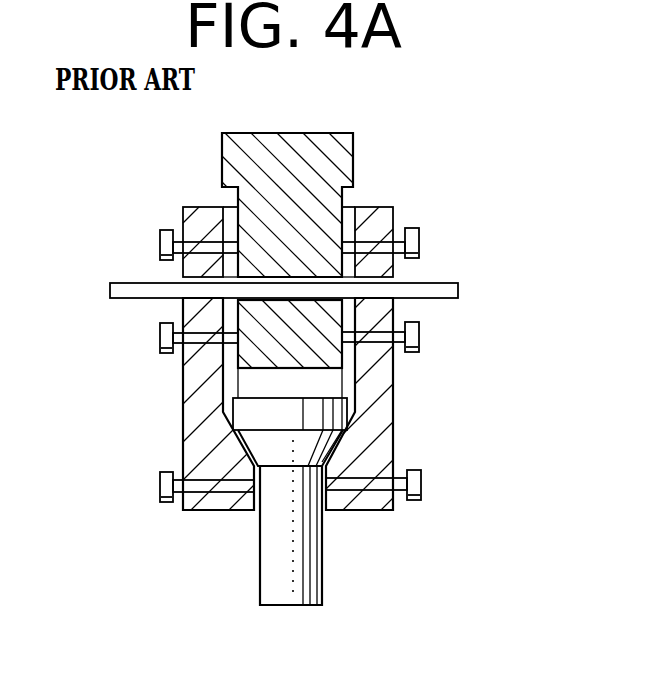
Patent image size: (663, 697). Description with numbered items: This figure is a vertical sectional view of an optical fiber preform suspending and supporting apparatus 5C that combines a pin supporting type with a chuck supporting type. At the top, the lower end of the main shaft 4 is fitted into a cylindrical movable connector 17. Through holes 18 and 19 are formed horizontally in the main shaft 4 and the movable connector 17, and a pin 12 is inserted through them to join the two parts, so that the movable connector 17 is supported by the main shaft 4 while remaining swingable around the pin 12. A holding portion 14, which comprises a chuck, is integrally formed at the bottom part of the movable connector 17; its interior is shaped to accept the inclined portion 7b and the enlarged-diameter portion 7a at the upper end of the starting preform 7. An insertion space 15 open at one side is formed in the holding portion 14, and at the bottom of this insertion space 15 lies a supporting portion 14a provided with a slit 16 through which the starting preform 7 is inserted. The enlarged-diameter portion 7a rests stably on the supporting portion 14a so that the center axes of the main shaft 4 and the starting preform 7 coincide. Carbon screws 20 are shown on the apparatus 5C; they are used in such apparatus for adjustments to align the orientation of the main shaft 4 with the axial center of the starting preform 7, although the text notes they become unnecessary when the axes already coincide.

The main shaft 4 is at (313, 177).
The movable connector 17 is at (378, 207).
The optical fiber preform suspending and supporting apparatus 5C is at (400, 211).
The through hole 18 is at (346, 272).
The pin 12 is at (456, 285).
The through hole 19 is at (388, 299).
The carbon screws 20 is at (165, 248).
The holding portion 14 is at (198, 428).
The supporting portion 14a is at (368, 500).
The insertion space 15 is at (238, 385).
The enlarged-diameter portion 7a is at (350, 398).
The inclined portion 7b is at (342, 440).
The starting preform 7 is at (303, 570).
The slit 16 is at (262, 505).